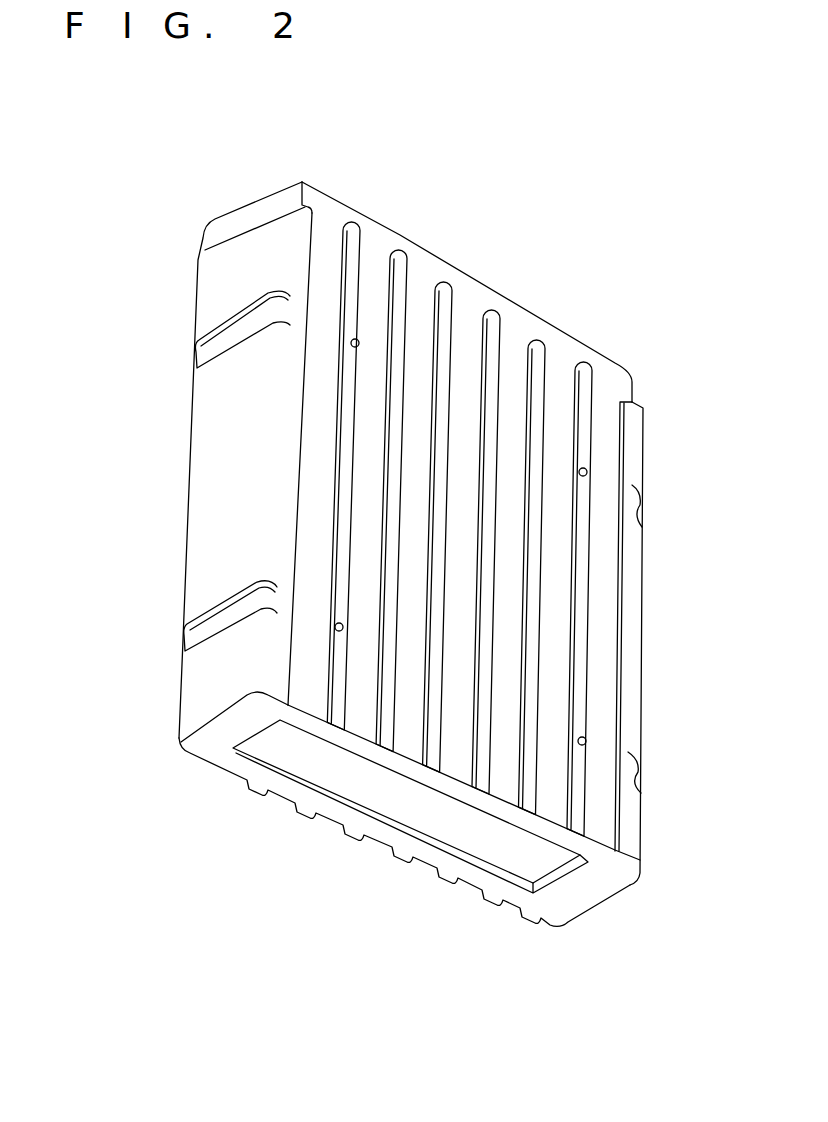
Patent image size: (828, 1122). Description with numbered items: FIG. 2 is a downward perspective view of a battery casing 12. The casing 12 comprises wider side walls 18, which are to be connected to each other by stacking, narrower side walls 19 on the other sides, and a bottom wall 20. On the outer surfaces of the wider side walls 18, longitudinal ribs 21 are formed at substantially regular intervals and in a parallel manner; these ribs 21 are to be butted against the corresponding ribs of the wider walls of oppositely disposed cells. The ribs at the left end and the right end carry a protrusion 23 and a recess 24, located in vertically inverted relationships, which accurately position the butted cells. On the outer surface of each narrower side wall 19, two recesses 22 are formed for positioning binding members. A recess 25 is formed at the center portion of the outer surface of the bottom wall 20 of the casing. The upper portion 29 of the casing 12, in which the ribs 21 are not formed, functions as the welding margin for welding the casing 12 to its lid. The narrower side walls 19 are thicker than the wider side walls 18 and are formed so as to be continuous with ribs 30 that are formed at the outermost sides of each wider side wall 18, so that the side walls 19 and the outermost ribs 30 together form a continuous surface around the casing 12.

The casing 12 is at (631, 355).
The wider side walls 18 is at (602, 607).
The narrower side walls 19 is at (205, 498).
The bottom wall 20 is at (562, 900).
The longitudinal ribs 21 is at (402, 278).
The recesses 22 is at (218, 340).
The protrusion 23 is at (350, 342).
The recess 24 is at (334, 627).
The recess 25 is at (443, 820).
The upper portion 29 is at (510, 313).
The ribs 30 is at (628, 662).